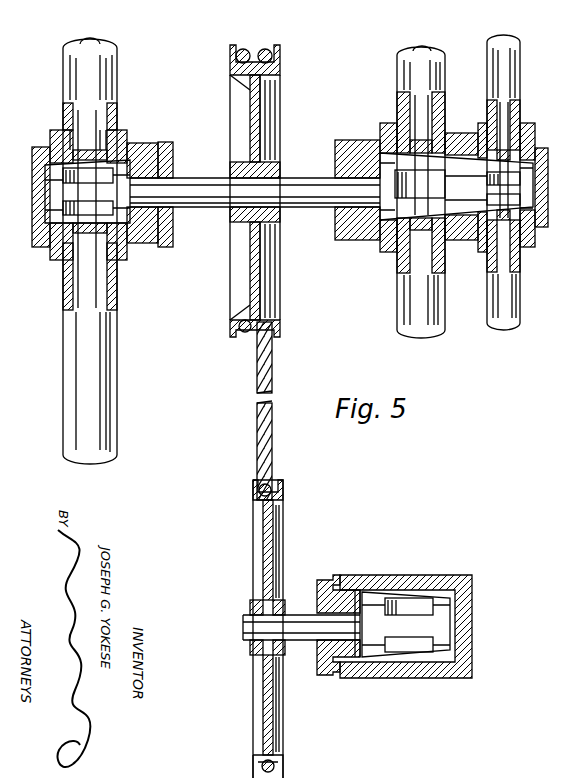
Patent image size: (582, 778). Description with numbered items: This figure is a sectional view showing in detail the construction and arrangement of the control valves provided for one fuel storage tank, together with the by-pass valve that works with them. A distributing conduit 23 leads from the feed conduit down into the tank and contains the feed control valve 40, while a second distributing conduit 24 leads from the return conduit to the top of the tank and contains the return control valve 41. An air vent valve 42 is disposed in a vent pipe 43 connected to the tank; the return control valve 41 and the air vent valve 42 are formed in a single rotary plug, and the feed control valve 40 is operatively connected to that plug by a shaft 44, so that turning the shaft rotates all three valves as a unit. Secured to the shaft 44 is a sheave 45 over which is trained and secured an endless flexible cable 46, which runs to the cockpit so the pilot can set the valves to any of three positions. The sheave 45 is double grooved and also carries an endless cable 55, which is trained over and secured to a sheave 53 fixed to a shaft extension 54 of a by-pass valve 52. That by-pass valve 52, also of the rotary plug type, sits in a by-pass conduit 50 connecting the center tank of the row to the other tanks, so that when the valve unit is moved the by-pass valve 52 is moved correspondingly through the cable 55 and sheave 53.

The distributing conduit 23 is at (100, 398).
The distributing conduit 24 is at (410, 315).
The feed control valve 40 is at (87, 191).
The return control valve 41 is at (456, 186).
The air vent valve 42 is at (508, 168).
The vent pipe 43 is at (516, 298).
The shaft 44 is at (185, 186).
The sheave 45 is at (238, 278).
The endless flexible cable 46 is at (240, 48).
The by-pass conduit 50 is at (440, 590).
The by-pass valve 52 is at (372, 605).
The sheave 53 is at (262, 552).
The shaft extension 54 is at (303, 612).
The endless cable 55 is at (270, 50).